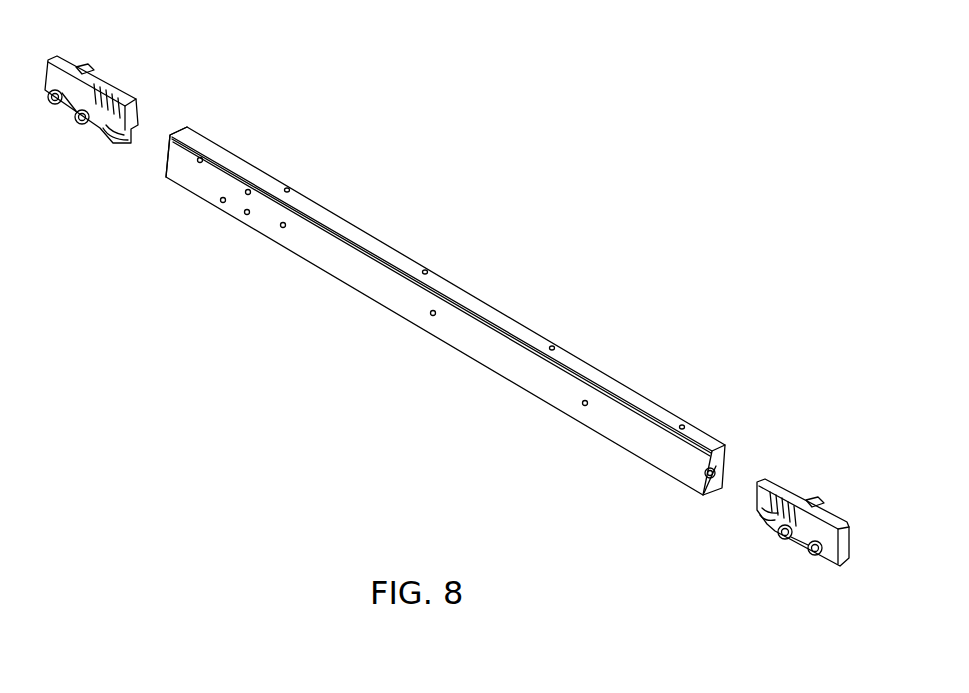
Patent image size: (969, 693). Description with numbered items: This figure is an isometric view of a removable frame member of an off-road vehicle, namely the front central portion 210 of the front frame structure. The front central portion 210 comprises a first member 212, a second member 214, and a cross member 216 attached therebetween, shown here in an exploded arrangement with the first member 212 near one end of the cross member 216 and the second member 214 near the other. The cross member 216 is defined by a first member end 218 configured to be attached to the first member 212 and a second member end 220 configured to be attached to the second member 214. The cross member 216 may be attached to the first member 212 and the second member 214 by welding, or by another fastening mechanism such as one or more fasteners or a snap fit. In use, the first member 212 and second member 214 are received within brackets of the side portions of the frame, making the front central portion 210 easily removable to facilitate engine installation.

The front central portion 210 is at (595, 198).
The first member 212 is at (130, 102).
The second member 214 is at (797, 498).
The cross member 216 is at (340, 218).
The first member end 218 is at (183, 130).
The second member end 220 is at (727, 457).